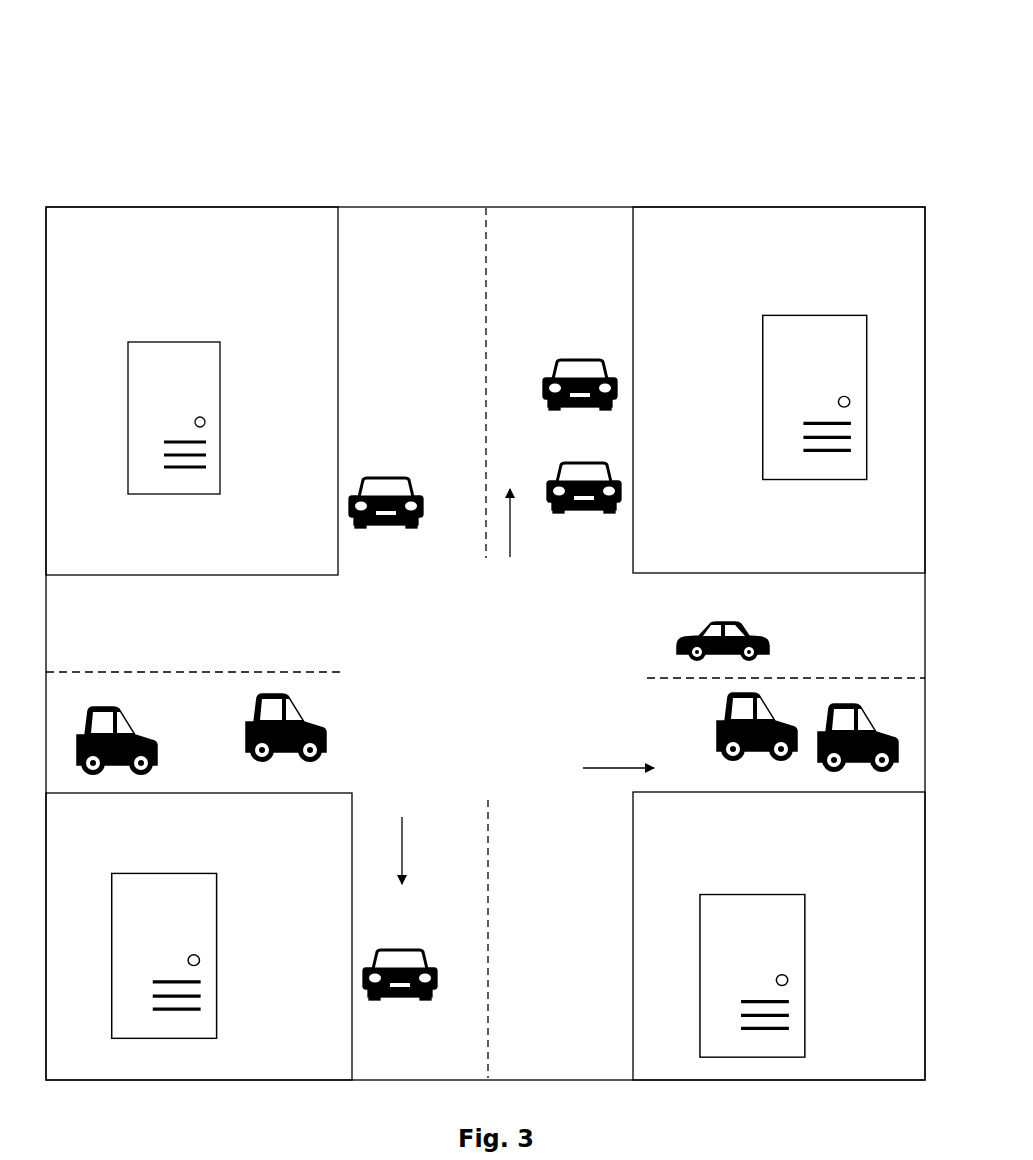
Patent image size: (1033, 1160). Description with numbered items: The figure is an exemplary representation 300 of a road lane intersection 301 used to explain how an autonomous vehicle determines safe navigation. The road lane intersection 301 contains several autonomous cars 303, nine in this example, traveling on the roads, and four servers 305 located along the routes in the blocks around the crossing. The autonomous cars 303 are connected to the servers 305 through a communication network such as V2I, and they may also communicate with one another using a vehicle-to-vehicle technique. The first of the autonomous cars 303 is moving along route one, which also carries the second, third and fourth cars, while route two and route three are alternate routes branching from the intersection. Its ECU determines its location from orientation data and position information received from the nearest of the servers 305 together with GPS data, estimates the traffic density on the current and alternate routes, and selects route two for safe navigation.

The exemplary representation 300 is at (854, 78).
The road lane intersection 301 is at (734, 199).
The autonomous cars 303 is at (140, 720).
The servers 305 is at (203, 336).